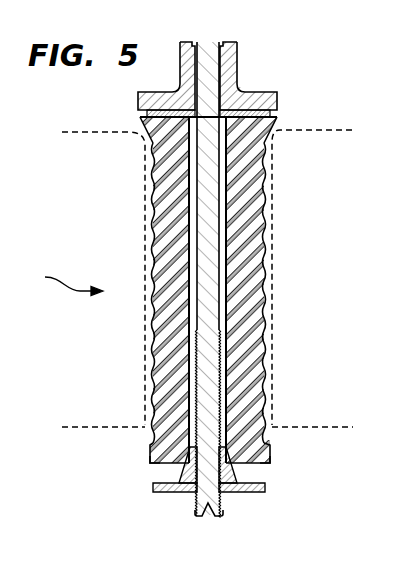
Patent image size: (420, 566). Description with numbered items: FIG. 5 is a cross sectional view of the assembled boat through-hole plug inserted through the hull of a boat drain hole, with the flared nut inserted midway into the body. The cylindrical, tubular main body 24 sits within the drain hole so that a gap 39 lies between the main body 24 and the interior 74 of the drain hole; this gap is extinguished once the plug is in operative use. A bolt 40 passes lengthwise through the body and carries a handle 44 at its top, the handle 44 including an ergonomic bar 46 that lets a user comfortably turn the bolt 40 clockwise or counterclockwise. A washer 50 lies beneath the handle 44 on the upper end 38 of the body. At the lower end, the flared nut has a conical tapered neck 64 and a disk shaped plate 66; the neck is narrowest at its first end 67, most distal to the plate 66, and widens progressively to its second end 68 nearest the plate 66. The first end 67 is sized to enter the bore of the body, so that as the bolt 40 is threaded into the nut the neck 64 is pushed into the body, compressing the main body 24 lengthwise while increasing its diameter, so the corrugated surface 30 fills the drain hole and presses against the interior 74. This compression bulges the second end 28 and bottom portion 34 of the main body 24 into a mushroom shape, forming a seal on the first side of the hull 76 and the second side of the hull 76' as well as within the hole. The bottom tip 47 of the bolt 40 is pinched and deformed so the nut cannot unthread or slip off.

The main body 24 is at (268, 275).
The second end of the body 28 is at (271, 463).
The corrugated surface 30 is at (206, 292).
The bottom portion of the main body 34 is at (150, 452).
The upper end of tube 38 is at (139, 118).
The gap 39 is at (152, 322).
The bolt 40 is at (172, 299).
The handle 44 is at (238, 82).
The ergonomic bar 46 is at (238, 58).
The bottom tip of the bolt 47 is at (222, 513).
The washer 50 is at (271, 112).
The conical tapered neck 64 is at (153, 479).
The disk shaped plate 66 is at (266, 490).
The first end of the tapered neck 67 is at (150, 460).
The second end of the tapered neck 68 is at (190, 497).
The interior of the drain hole 74 is at (60, 284).
The first side of the hull 76 is at (219, 258).
The second side of the hull 76' is at (226, 453).